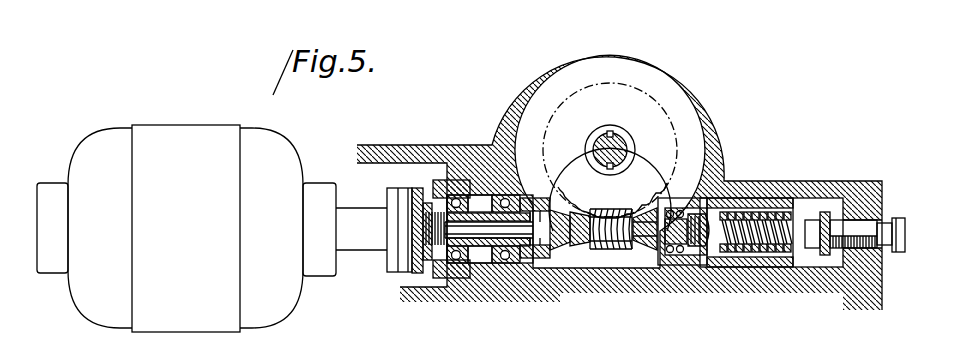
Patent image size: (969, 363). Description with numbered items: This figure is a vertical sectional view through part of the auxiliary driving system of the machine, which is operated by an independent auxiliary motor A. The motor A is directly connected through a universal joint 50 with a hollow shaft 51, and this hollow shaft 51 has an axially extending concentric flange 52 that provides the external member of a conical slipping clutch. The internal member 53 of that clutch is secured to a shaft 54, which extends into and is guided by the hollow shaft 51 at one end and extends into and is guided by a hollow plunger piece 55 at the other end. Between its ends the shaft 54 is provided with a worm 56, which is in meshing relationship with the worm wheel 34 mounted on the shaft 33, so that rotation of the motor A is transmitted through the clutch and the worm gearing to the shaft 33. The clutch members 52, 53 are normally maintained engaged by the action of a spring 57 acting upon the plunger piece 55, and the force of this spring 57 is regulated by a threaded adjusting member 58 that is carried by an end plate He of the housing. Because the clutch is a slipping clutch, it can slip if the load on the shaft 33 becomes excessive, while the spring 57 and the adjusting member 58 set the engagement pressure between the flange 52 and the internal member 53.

The auxiliary motor A is at (197, 112).
The shaft 33 is at (600, 140).
The worm wheel 34 is at (660, 127).
The universal joint 50 is at (395, 248).
The hollow shaft 51 is at (476, 250).
The concentric flange 52 is at (540, 200).
The internal member 53 is at (538, 260).
The shaft 54 is at (580, 243).
The hollow plunger piece 55 is at (717, 257).
The worm 56 is at (617, 246).
The spring 57 is at (792, 252).
The threaded adjusting member 58 is at (872, 218).
The end plate He is at (872, 279).